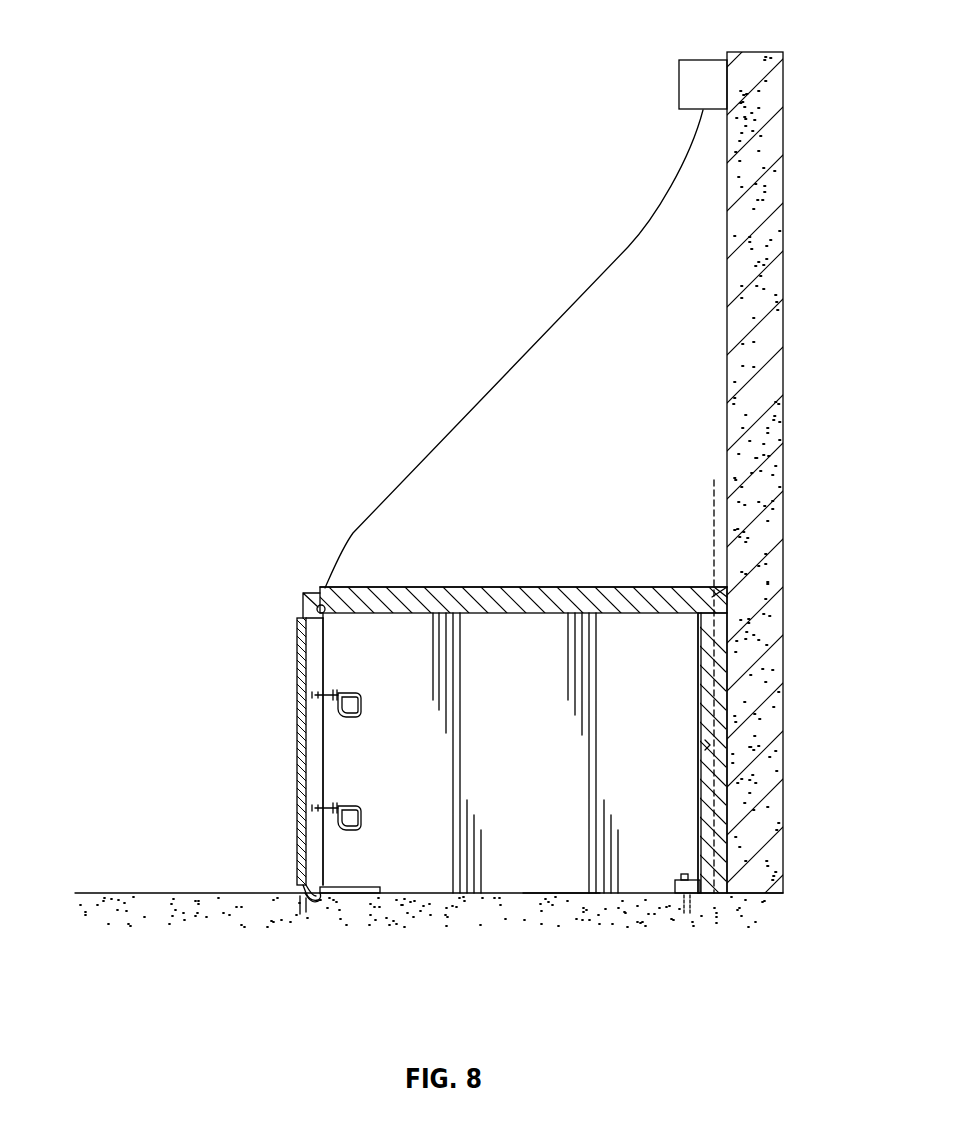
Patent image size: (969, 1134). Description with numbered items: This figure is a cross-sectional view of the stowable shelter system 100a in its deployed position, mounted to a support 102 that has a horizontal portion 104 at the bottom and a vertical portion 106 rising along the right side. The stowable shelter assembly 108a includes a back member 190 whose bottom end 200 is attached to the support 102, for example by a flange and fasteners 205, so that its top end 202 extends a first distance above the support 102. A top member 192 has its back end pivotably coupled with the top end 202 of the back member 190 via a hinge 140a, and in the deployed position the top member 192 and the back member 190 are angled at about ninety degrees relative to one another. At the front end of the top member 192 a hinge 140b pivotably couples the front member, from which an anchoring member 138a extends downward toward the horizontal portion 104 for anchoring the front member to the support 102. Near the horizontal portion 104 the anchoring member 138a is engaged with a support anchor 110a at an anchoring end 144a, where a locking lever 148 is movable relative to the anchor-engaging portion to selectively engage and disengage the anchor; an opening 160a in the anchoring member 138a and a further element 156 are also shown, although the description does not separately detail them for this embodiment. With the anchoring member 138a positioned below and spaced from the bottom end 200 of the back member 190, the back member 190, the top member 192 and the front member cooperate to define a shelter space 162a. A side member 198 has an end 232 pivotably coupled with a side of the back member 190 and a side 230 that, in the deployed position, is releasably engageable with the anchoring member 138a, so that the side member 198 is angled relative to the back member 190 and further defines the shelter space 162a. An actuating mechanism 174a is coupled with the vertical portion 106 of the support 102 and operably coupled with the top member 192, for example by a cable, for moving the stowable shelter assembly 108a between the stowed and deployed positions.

The stowable shelter system 100a is at (226, 46).
The support 102 is at (129, 889).
The horizontal portion 104 is at (297, 760).
The vertical portion 106 is at (783, 290).
The stowable shelter assembly 108a is at (511, 583).
The support anchor 110a is at (309, 904).
The anchoring member 138a is at (294, 650).
The hinge 140a is at (711, 740).
The hinge 140b is at (316, 606).
The base hook 144a is at (308, 888).
The locking lever 148 is at (355, 887).
The lower clamp 156 is at (362, 812).
The upper clamp 160a is at (316, 693).
The shelter space 162a is at (525, 893).
The actuating mechanism 174a is at (679, 84).
The back member 190 is at (716, 660).
The top member 192 is at (585, 587).
The side member 198 is at (530, 766).
The bottom end 200 is at (708, 898).
The top end 202 is at (720, 603).
The fasteners 205 is at (714, 530).
The side 230 is at (323, 672).
The end 232 is at (698, 700).